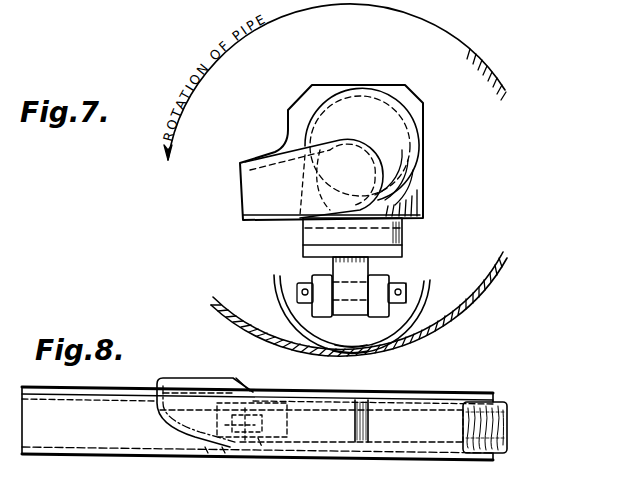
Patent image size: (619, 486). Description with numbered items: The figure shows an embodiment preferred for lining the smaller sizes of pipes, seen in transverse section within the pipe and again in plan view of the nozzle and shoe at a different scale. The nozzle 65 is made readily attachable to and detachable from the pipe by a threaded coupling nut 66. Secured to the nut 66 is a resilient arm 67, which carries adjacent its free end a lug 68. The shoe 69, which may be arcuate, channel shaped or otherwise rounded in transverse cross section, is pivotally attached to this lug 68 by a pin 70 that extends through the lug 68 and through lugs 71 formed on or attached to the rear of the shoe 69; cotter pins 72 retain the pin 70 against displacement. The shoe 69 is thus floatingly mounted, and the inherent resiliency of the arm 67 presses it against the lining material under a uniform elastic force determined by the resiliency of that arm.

In FIG. 7, the nozzle 65 is at (346, 157).
In FIG. 8, the threaded coupling nut 66 is at (499, 404).
In FIG. 8, the resilient arm 67 is at (339, 428).
In FIG. 7, the lug 68 is at (343, 270).
In FIG. 8, the lug 68 is at (266, 450).
In FIG. 8, the shoe 69 is at (176, 445).
In FIG. 7, the pin 70 is at (407, 291).
In FIG. 7, the lugs 71 is at (323, 318).
In FIG. 8, the lugs 71 is at (223, 446).
In FIG. 7, the cotter pins 72 is at (303, 292).
In FIG. 8, the cotter pins 72 is at (243, 400).